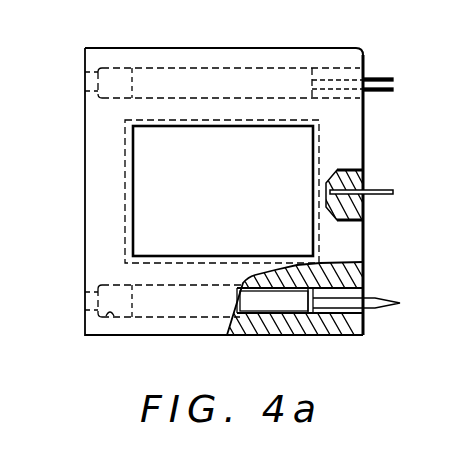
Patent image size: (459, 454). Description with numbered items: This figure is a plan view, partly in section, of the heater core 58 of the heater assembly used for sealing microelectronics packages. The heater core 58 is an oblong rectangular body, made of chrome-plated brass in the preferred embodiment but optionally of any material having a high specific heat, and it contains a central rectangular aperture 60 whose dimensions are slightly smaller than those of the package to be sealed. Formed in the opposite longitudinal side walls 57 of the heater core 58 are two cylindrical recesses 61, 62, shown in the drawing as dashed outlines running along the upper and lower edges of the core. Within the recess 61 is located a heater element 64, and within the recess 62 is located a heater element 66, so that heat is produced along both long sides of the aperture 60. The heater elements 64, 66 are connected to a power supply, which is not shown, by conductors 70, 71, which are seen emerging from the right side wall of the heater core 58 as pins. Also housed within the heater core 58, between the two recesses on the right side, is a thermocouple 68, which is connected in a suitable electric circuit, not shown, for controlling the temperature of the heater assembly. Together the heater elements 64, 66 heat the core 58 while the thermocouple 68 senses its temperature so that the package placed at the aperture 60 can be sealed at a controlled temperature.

The longitudinal side wall 57 is at (257, 48).
The heater core 58 is at (85, 240).
The rectangular aperture 60 is at (134, 208).
The cylindrical recess 61 is at (177, 77).
The cylindrical recess 62 is at (107, 318).
The heater element 64 is at (155, 76).
The heater element 66 is at (170, 312).
The thermocouple 68 is at (393, 190).
The conductor 70 is at (317, 315).
The conductor 71 is at (393, 88).